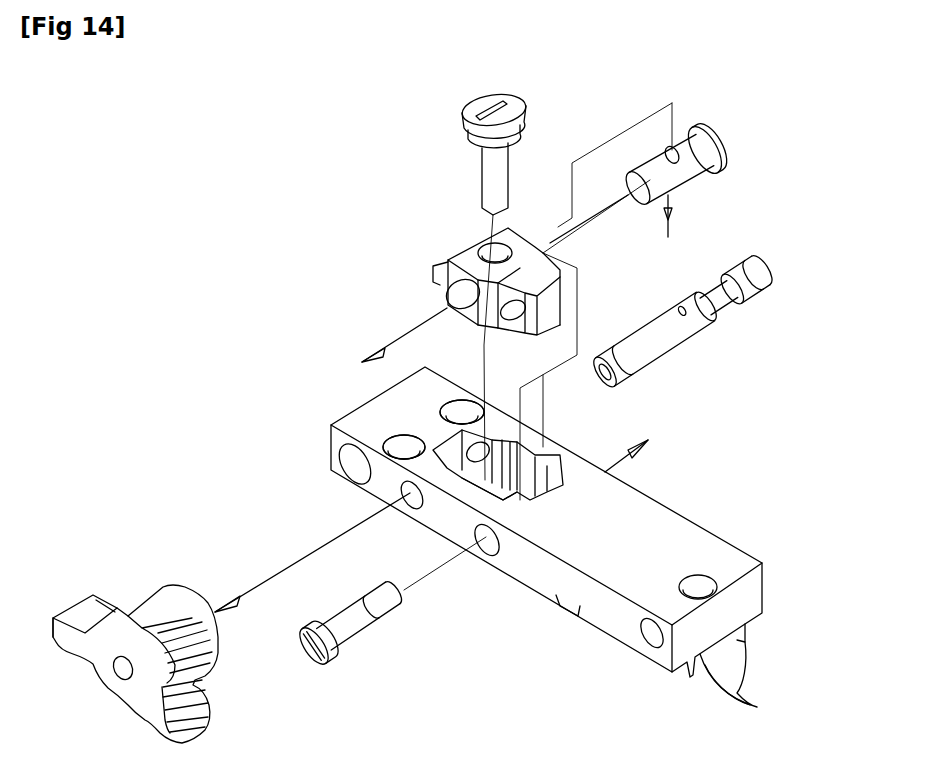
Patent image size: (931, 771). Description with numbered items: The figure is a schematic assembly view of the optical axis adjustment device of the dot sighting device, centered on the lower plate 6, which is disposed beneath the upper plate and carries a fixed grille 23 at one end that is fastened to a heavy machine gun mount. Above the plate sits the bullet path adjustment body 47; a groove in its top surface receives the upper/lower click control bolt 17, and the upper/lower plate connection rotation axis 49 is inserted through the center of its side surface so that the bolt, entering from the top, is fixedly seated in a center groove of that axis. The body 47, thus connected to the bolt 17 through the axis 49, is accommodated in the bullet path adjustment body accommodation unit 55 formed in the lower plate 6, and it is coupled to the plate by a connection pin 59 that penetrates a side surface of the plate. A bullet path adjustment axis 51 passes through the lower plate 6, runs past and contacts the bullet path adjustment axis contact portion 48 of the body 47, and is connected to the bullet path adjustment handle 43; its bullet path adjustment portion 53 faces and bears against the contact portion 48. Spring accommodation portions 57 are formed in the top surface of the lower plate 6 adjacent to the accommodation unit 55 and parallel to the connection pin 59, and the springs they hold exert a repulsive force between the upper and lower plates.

The lower plate 6 is at (538, 573).
The upper/lower click control bolt 17 is at (487, 110).
The fixed grille 23 is at (700, 660).
The bullet path adjustment handle 43 is at (152, 613).
The bullet path adjustment body 47 is at (460, 258).
The bullet path adjustment axis contact portion 48 is at (436, 264).
The upper/lower plate connection rotation axis 49 is at (687, 155).
The bullet path adjustment axis 51 is at (667, 300).
The bullet path adjustment portion 53 is at (736, 309).
The bullet path adjustment body accommodation unit 55 is at (519, 476).
The spring accommodation portions 57 is at (460, 410).
The connection pin 59 is at (348, 628).